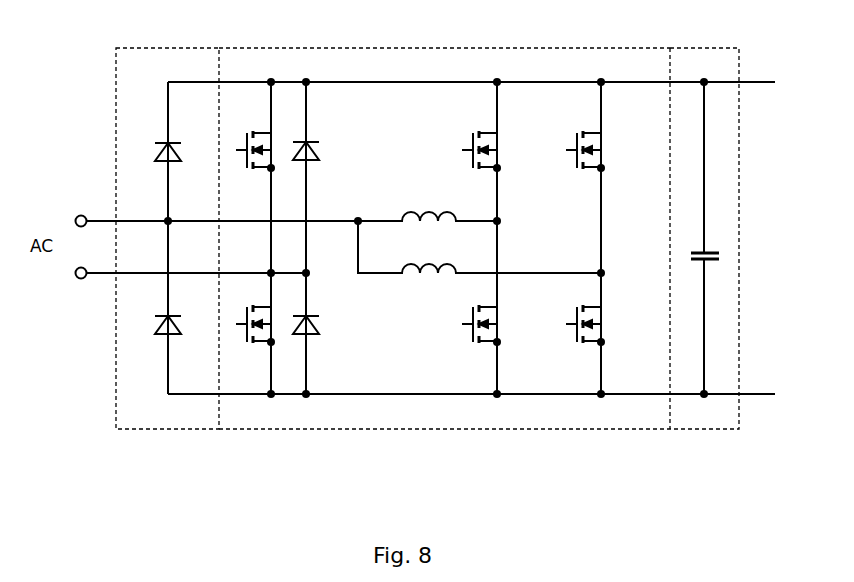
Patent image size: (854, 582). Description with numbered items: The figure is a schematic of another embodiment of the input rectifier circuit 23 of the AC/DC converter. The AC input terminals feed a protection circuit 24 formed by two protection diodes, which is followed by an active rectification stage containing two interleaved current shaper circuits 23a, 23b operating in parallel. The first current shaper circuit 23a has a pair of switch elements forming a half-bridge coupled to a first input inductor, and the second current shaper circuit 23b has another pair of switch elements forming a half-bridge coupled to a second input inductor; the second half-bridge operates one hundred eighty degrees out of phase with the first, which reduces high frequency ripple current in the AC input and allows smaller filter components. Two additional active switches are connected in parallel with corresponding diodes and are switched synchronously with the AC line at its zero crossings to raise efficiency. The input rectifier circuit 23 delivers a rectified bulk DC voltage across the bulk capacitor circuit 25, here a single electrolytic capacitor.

The input rectifier circuit 23 is at (444, 263).
The first current shaper circuit 23a is at (467, 378).
The second current shaper circuit 23b is at (567, 378).
The protection circuit 24 is at (70, 420).
The bulk capacitor circuit 25 is at (749, 58).